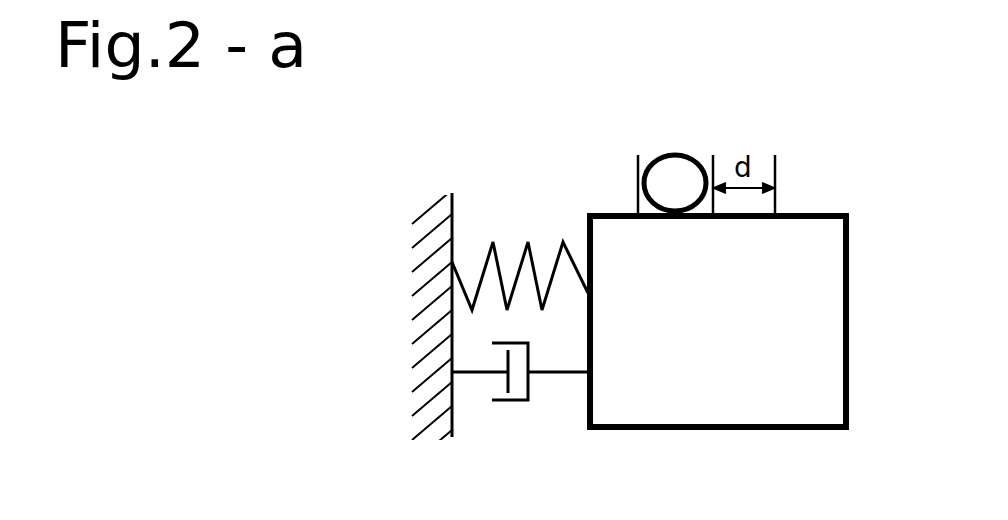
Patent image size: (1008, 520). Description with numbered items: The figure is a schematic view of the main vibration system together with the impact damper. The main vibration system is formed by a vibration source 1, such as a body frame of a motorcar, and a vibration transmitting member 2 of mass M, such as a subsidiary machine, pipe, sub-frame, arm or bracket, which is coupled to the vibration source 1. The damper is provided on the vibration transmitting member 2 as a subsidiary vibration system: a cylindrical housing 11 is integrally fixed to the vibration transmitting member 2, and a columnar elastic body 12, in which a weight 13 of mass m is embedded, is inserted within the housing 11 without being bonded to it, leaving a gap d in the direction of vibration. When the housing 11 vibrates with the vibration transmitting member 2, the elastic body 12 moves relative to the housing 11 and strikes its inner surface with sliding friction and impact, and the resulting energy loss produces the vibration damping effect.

The vibration source 1 is at (450, 413).
The vibration transmitting member 2 is at (847, 322).
The housing 11 is at (636, 157).
The elastic body 12 is at (668, 153).
The weight 13 is at (685, 167).